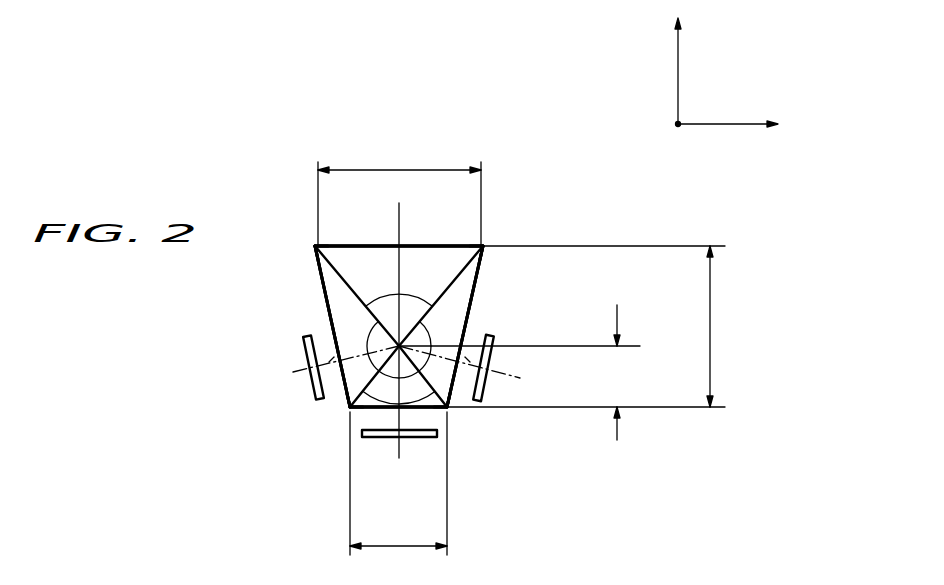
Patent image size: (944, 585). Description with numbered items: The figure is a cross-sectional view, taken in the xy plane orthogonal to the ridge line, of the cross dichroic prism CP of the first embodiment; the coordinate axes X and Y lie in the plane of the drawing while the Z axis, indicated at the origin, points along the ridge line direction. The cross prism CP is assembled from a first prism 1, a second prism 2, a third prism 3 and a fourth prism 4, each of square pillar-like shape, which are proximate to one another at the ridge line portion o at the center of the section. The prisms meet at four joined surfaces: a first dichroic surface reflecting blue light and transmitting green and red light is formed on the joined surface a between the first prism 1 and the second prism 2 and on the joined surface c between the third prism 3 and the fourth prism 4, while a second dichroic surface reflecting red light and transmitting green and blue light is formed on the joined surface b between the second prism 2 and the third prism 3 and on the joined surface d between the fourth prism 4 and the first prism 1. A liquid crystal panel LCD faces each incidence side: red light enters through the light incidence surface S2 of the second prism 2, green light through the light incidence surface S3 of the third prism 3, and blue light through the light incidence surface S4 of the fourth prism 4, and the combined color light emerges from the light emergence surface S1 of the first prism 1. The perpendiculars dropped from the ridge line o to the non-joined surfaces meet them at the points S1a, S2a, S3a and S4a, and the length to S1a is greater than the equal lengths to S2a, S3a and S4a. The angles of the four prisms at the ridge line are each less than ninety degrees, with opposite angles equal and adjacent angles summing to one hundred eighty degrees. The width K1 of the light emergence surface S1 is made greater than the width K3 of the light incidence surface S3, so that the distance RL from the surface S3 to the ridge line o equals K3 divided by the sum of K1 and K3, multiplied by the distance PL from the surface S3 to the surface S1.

The cross dichroic prism CP is at (506, 178).
The first prism 1 is at (440, 245).
The second prism 2 is at (479, 282).
The third prism 3 is at (427, 410).
The fourth prism 4 is at (321, 275).
The light emergence surface S1 is at (367, 245).
The foot of perpendicular to light emergence surface S1 S1a is at (400, 245).
The light incidence surface of second prism S2 is at (473, 307).
The foot of perpendicular to light incidence surface S2 S2a is at (474, 358).
The light incidence surface of third prism S3 is at (382, 409).
The foot of perpendicular to light incidence surface S3 S3a is at (402, 432).
The light incidence surface of fourth prism S4 is at (328, 335).
The foot of perpendicular to light incidence surface S4 S4a is at (312, 354).
The joined surface of first and second prisms a is at (462, 245).
The joined surface of second and third prisms b is at (448, 408).
The joined surface of third and fourth prisms c is at (350, 408).
The joined surface of fourth and first prisms d is at (336, 246).
The ridge line portion o is at (398, 347).
The liquid crystal panel LCD is at (312, 384).
The width of light emergence surface K1 is at (399, 195).
The width of light incidence surface S3 K3 is at (398, 494).
The distance from surface S3 to surface S1 PL is at (724, 326).
The distance from surface S3 to ridge line portion RL is at (632, 372).
The X axis X is at (736, 126).
The Y axis Y is at (677, 62).
The Z axis Z is at (668, 125).